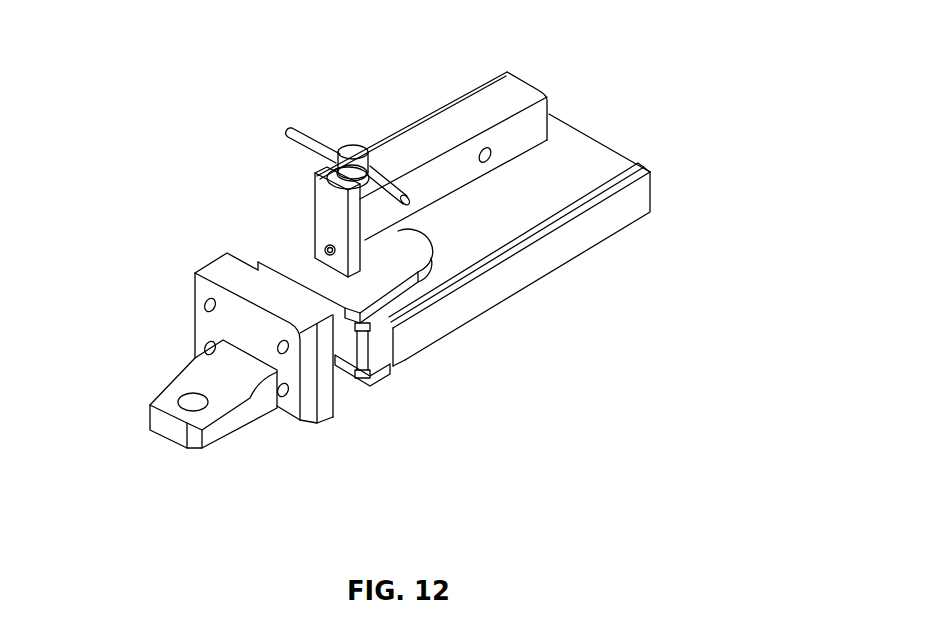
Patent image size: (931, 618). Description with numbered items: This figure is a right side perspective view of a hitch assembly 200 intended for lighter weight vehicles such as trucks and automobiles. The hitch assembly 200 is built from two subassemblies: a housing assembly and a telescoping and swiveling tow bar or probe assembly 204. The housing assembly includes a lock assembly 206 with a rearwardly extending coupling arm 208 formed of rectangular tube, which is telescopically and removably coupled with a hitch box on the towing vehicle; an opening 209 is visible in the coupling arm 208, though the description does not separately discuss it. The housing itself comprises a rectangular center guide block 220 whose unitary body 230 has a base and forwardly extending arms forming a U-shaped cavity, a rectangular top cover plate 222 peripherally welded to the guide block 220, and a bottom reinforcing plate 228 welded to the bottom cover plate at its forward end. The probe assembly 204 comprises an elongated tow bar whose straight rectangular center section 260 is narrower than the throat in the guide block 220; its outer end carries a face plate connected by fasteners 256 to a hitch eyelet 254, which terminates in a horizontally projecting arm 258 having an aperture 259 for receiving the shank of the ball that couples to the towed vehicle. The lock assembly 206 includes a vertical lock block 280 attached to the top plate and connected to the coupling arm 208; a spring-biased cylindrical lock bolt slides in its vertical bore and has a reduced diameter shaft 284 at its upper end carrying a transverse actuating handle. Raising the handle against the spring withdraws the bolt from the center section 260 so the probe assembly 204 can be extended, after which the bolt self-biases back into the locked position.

The hitch assembly 200 is at (557, 265).
The probe assembly 204 is at (367, 380).
The lock assembly 206 is at (315, 203).
The coupling arm 208 is at (523, 78).
The hole 209 is at (490, 150).
The center guide block 220 is at (650, 195).
The top cover plate 222 is at (613, 152).
The bottom reinforcing plate 228 is at (375, 352).
The unitary body 230 is at (383, 303).
The hitch eyelet 254 is at (195, 282).
The fasteners 256 is at (283, 396).
The horizontally projecting arm 258 is at (195, 382).
The aperture 259 is at (195, 405).
The center section 260 is at (353, 147).
The lock block 280 is at (327, 225).
The shaft 284 is at (298, 130).